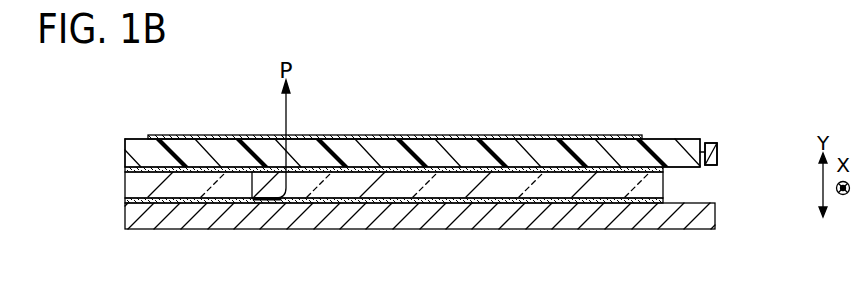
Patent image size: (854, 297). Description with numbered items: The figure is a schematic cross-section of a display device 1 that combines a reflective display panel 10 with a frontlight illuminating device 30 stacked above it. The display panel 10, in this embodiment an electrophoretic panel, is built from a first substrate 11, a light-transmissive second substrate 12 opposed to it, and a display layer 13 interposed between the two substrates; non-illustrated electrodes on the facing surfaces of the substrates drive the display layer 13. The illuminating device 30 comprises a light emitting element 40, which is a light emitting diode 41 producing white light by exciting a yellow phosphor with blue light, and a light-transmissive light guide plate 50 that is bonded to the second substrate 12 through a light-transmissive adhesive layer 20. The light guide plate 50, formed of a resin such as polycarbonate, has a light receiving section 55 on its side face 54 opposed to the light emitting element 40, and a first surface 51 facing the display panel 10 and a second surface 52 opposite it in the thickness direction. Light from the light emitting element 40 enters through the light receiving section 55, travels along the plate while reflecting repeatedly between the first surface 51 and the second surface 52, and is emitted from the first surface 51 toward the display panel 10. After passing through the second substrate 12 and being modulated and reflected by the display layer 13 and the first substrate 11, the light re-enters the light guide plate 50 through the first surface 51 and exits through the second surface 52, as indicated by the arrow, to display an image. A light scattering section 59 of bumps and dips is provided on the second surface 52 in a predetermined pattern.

The display device 1 is at (613, 111).
The display panel 10 is at (115, 173).
The first substrate 11 is at (424, 213).
The second substrate 12 is at (488, 185).
The display layer 13 is at (544, 169).
The adhesive layer 20 is at (353, 170).
The illuminating device 30 is at (115, 142).
The light emitting element 40 is at (712, 168).
The light emitting diode 41 is at (711, 154).
The light guide plate 50 is at (665, 143).
The first surface 51 is at (462, 168).
The second surface 52 is at (497, 137).
The side face 54 is at (120, 137).
The light receiving section 55 is at (711, 143).
The light scattering section 59 is at (223, 135).